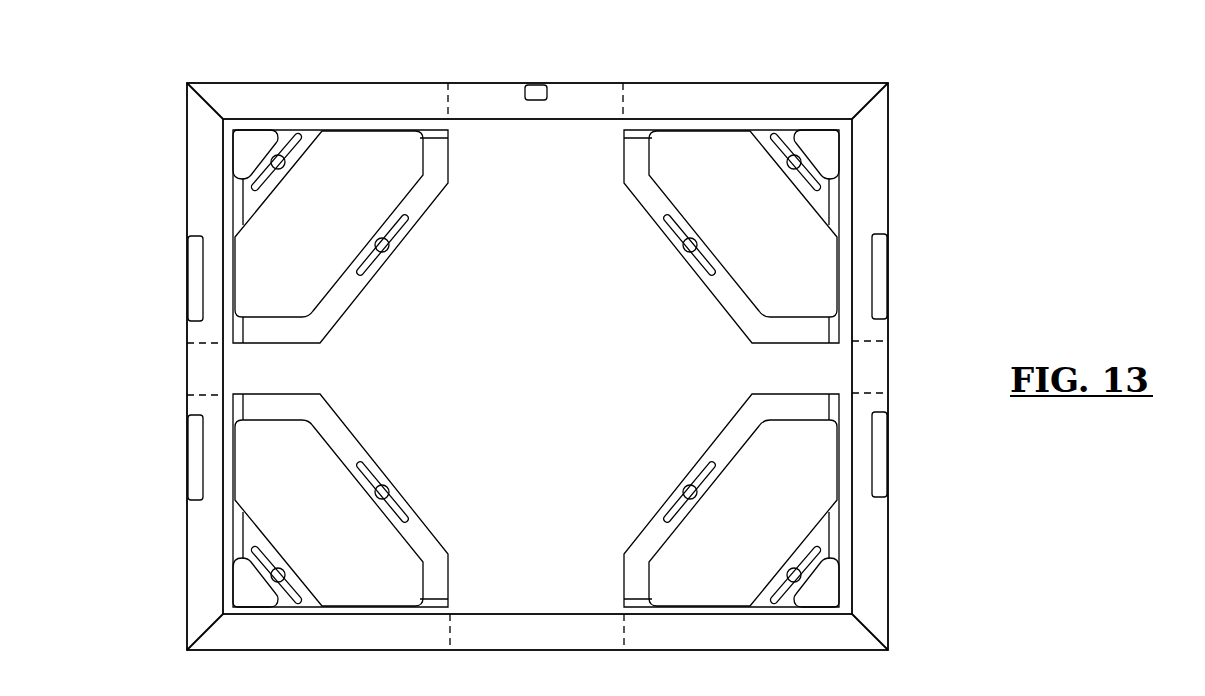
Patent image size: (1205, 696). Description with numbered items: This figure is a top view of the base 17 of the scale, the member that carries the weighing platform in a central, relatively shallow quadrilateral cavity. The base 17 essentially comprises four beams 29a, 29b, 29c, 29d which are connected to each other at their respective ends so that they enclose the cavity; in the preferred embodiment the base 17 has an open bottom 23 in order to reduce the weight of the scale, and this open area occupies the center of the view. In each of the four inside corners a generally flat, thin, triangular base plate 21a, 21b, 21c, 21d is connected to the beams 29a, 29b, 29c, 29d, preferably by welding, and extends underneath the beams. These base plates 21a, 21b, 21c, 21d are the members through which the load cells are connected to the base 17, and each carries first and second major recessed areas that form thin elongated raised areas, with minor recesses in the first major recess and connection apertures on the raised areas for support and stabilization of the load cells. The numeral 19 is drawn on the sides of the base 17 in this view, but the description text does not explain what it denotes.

The base 17 is at (922, 181).
The handle 19 is at (197, 288).
The base plate 21a is at (343, 236).
The base plate 21b is at (367, 500).
The base plate 21c is at (721, 500).
The base plate 21d is at (729, 238).
The open bottom 23 is at (561, 380).
The beam 29a is at (500, 97).
The beam 29b is at (197, 217).
The beam 29c is at (538, 632).
The beam 29d is at (873, 523).